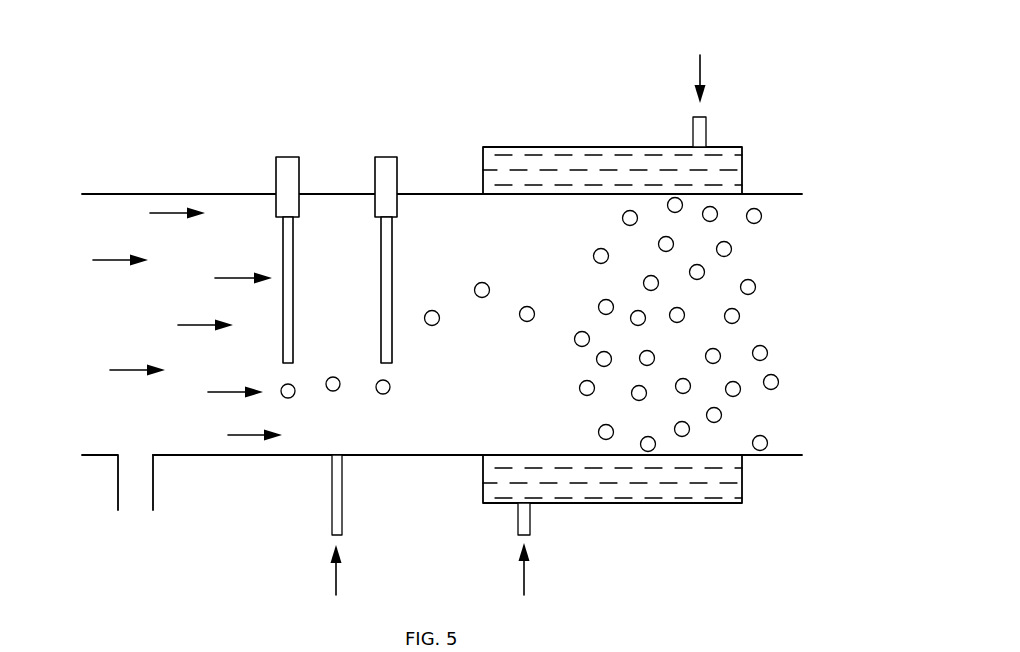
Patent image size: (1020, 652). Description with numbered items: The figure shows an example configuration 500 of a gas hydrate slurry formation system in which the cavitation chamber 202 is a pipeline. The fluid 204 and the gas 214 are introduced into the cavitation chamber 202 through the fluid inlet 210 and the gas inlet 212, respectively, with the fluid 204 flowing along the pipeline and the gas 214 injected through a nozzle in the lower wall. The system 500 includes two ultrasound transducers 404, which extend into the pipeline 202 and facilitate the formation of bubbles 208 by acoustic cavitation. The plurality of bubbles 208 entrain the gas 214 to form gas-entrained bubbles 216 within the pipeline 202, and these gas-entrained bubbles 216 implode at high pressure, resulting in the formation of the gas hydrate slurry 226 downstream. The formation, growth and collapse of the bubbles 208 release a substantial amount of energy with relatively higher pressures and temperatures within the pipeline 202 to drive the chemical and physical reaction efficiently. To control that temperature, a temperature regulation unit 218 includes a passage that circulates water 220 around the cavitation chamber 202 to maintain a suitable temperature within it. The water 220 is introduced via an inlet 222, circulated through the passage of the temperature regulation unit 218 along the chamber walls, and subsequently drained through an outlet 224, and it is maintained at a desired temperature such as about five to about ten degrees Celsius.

The gas hydrate slurry formation system 500 is at (817, 72).
The cavitation chamber 202 is at (177, 193).
The fluid 204 is at (247, 455).
The fluid inlet 210 is at (138, 490).
The ultrasound transducers 404 is at (385, 158).
The gas-entrained bubbles 216 is at (434, 311).
The temperature regulation unit 218 is at (573, 147).
The outlet 224 is at (702, 115).
The water 220 is at (687, 498).
The inlet 222 is at (523, 537).
The gas inlet 212 is at (332, 543).
The gas 214 is at (342, 587).
The bubbles 208 is at (383, 395).
The gas hydrate slurry 226 is at (771, 390).